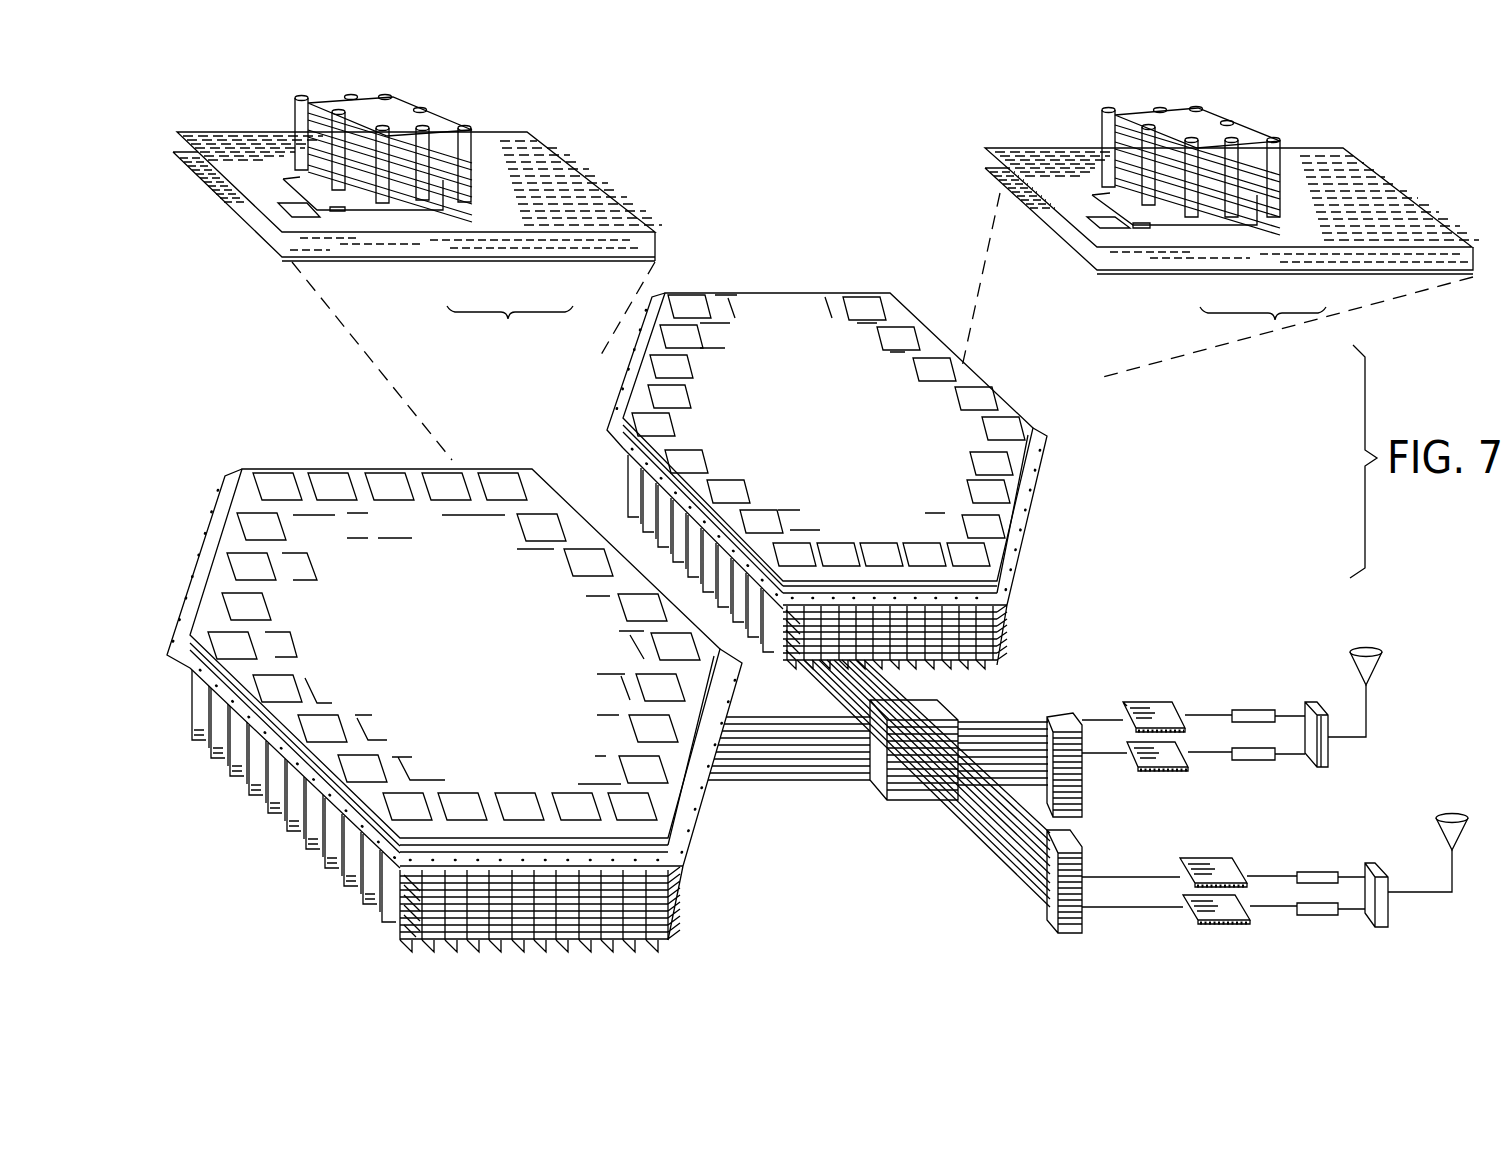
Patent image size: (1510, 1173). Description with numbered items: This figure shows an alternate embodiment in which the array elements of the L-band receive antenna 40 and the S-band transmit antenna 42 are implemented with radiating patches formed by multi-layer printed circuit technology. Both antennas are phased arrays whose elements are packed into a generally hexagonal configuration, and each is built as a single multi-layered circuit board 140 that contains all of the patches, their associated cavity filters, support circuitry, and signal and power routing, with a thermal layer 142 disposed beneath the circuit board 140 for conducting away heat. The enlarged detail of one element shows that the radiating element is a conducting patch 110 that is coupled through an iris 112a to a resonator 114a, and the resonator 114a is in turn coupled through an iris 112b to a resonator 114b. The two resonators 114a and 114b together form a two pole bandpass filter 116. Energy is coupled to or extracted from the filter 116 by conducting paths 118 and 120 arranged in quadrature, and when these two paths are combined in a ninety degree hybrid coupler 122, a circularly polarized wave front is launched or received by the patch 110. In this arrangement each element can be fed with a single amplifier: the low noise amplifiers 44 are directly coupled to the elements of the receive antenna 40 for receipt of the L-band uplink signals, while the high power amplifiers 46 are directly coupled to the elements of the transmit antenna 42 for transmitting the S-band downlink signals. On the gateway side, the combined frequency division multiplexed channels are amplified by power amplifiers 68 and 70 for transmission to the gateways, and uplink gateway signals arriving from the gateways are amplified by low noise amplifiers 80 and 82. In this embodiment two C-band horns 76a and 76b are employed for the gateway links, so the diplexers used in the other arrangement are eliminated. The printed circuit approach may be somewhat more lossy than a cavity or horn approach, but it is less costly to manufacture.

The L-band receive antenna 40 is at (270, 884).
The S-band transmit antenna 42 is at (1121, 541).
The low noise amplifier 44 is at (287, 212).
The high power amplifier 46 is at (1100, 228).
The power amplifier 68 is at (1217, 857).
The power amplifier 70 is at (1223, 923).
The C-band horn 76a is at (1377, 673).
The C-band horn 76b is at (1452, 815).
The low noise amplifier 80 is at (1140, 702).
The low noise amplifier 82 is at (1160, 772).
The conducting patch 110 is at (313, 468).
The iris 112a is at (465, 142).
The iris 112b is at (462, 163).
The resonator 114a is at (423, 200).
The resonator 114b is at (467, 203).
The two pole bandpass filter 116 is at (886, 331).
The conducting path 118 is at (367, 211).
The conducting path 120 is at (293, 178).
The 90° hybrid coupler 122 is at (337, 213).
The multi-layered circuit board 140 is at (178, 673).
The thermal layer 142 is at (202, 168).